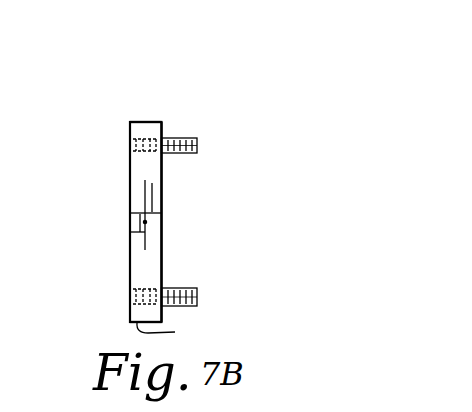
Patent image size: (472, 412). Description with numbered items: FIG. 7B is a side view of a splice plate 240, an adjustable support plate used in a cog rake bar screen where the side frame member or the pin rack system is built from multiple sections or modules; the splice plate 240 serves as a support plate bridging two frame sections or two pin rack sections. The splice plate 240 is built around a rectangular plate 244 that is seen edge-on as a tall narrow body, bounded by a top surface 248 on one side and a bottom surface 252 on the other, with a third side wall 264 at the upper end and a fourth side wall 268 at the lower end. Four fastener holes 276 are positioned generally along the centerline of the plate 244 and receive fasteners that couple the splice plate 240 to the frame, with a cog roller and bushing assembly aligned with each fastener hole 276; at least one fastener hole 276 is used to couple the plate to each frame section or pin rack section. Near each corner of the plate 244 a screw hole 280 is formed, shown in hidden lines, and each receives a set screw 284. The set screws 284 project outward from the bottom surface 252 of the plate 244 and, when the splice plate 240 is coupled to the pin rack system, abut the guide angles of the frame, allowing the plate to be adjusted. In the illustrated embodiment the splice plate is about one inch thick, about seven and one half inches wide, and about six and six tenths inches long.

The splice plate 240 is at (117, 109).
The rectangular plate 244 is at (141, 256).
The top surface 248 is at (130, 178).
The bottom surface 252 is at (162, 185).
The third side wall 264 is at (150, 121).
The fourth side wall 268 is at (175, 332).
The fastener hole 276 is at (170, 222).
The screw hole 280 is at (133, 144).
The set screw 284 is at (196, 142).